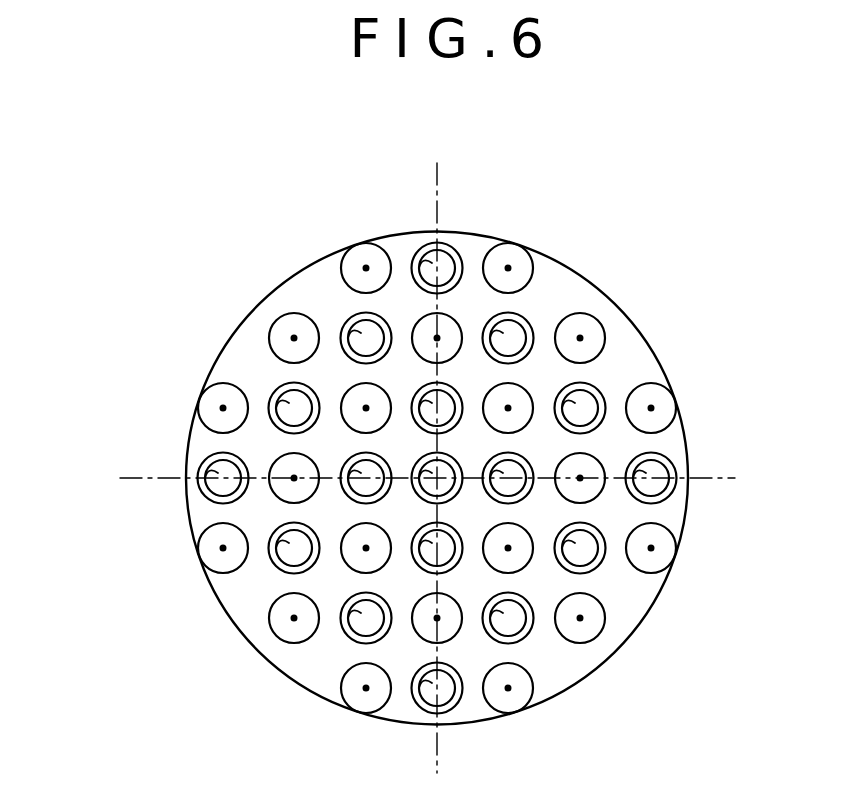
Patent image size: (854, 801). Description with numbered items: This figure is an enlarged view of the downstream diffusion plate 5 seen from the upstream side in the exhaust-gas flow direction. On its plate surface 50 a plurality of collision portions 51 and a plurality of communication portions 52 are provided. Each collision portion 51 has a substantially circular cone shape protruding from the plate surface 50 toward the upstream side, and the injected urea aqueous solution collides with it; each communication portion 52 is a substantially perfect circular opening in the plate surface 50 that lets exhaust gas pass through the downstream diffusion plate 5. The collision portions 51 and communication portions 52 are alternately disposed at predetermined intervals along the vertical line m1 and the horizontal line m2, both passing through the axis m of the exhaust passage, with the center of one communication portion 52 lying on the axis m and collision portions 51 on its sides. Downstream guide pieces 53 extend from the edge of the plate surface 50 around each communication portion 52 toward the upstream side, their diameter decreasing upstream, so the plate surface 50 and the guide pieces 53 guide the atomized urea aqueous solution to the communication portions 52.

The downstream diffusion plate 5 is at (395, 166).
The plate surface 50 is at (490, 303).
The collision portion 51 is at (363, 253).
The communication portion 52 is at (440, 335).
The downstream guide piece 53 is at (492, 325).
The axis m is at (560, 450).
The vertical line m1 is at (437, 172).
The horizontal line m2 is at (143, 478).